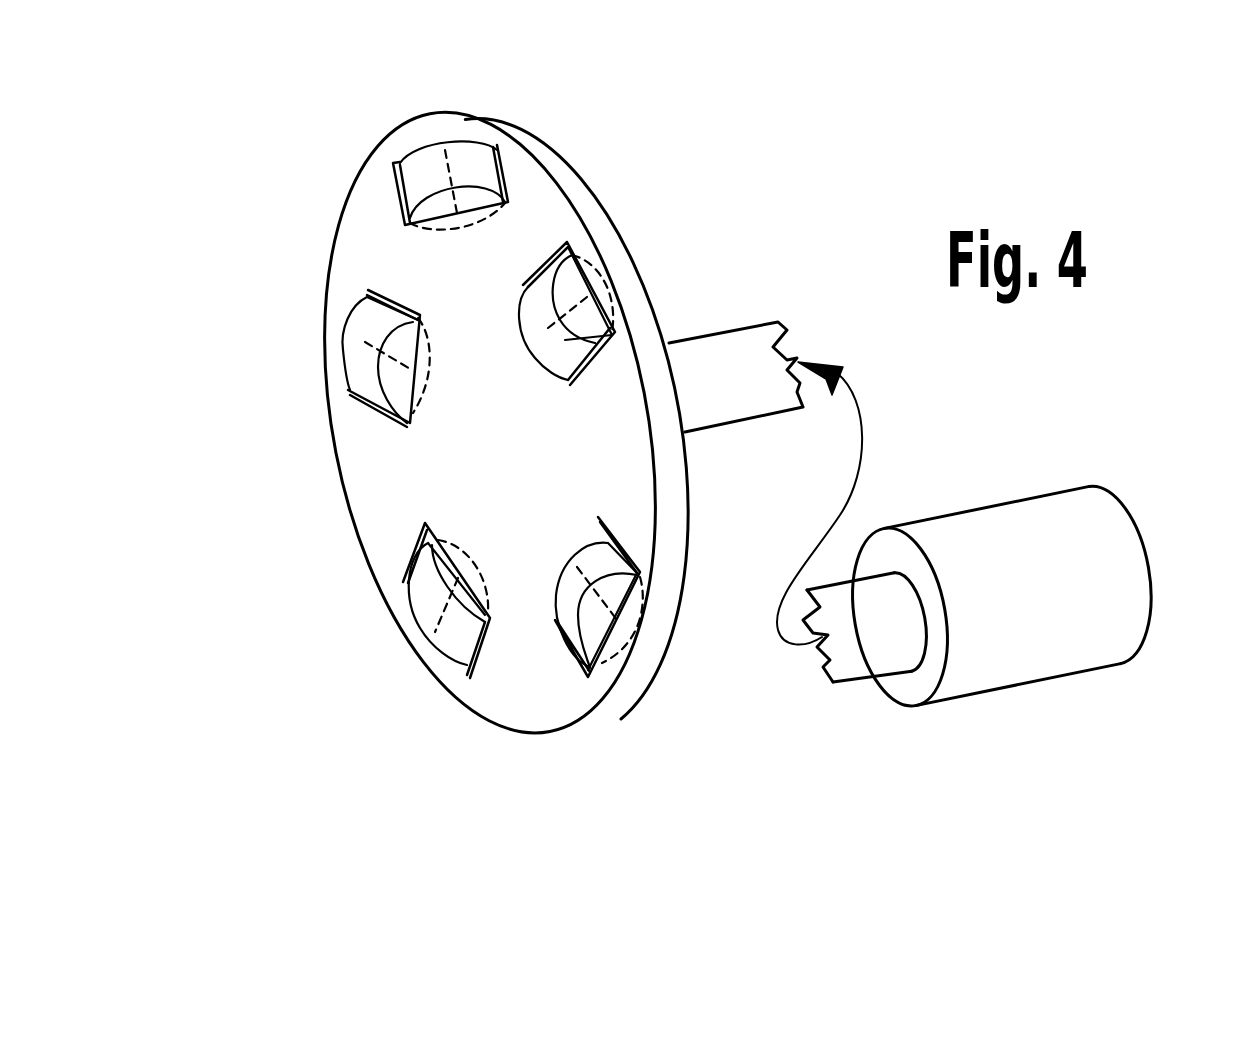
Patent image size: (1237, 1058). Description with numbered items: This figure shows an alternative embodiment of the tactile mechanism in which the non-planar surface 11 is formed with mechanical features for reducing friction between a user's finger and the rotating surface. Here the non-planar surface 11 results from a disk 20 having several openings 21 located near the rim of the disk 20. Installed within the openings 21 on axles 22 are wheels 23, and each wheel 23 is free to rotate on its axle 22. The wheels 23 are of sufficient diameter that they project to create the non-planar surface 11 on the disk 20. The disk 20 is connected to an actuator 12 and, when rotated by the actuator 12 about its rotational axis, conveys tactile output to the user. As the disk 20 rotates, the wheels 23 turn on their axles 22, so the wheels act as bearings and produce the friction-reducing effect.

The non-planar surface 11 is at (335, 257).
The actuator 12 is at (1048, 630).
The disk 20 is at (667, 528).
The openings 21 is at (610, 640).
The axles 22 is at (380, 406).
The wheels 23 is at (568, 340).